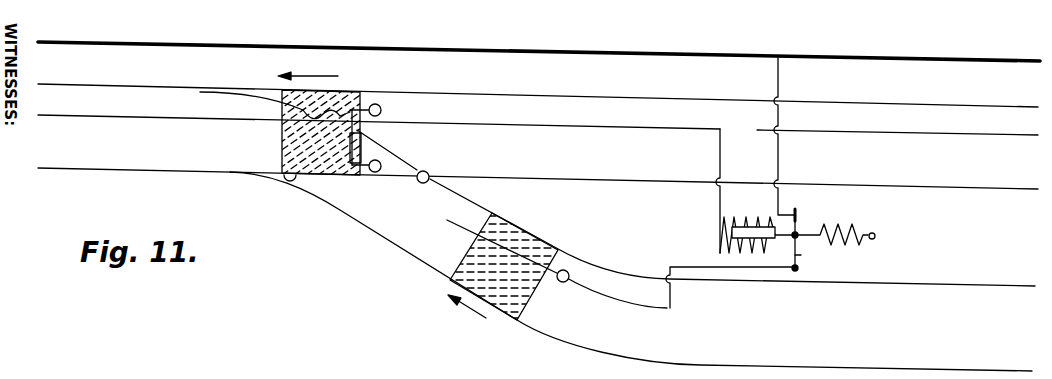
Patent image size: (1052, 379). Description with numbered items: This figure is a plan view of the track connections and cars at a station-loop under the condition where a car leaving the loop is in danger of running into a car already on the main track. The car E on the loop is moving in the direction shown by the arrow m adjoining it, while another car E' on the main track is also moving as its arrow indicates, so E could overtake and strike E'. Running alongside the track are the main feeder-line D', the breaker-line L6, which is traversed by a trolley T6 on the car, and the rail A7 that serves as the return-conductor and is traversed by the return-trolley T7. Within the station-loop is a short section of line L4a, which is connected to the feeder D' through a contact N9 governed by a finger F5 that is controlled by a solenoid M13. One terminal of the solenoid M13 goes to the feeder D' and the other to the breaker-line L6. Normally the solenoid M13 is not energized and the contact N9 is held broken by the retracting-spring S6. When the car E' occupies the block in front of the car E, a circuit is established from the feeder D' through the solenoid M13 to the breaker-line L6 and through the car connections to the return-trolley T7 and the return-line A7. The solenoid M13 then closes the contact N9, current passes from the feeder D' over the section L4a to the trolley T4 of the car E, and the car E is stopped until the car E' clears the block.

The main feeder-line D' is at (539, 62).
The breaker-line L6 is at (538, 177).
The rail A7 is at (538, 185).
The car on the main track E' is at (318, 143).
The trolley T6 is at (379, 105).
The return-trolley T7 is at (370, 178).
The trolley T4 is at (557, 264).
The car on the loop E is at (505, 266).
The short section of line L4a is at (730, 294).
The solenoid M13 is at (757, 223).
The contact N9 is at (812, 214).
The finger F5 is at (807, 251).
The retracting-spring S6 is at (835, 247).
The direction of motion m is at (389, 201).